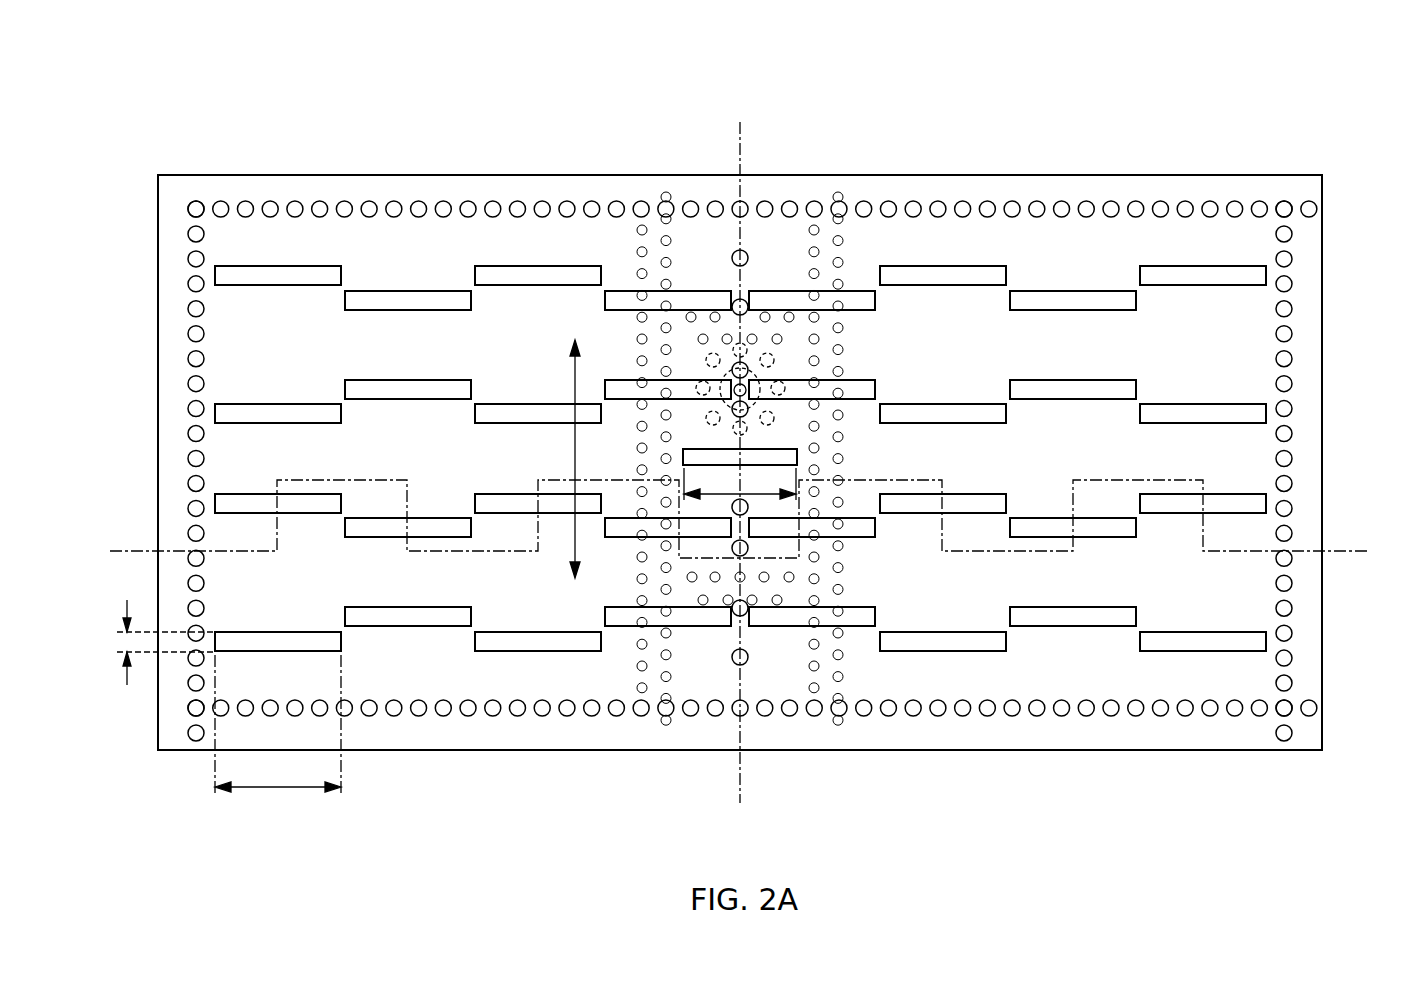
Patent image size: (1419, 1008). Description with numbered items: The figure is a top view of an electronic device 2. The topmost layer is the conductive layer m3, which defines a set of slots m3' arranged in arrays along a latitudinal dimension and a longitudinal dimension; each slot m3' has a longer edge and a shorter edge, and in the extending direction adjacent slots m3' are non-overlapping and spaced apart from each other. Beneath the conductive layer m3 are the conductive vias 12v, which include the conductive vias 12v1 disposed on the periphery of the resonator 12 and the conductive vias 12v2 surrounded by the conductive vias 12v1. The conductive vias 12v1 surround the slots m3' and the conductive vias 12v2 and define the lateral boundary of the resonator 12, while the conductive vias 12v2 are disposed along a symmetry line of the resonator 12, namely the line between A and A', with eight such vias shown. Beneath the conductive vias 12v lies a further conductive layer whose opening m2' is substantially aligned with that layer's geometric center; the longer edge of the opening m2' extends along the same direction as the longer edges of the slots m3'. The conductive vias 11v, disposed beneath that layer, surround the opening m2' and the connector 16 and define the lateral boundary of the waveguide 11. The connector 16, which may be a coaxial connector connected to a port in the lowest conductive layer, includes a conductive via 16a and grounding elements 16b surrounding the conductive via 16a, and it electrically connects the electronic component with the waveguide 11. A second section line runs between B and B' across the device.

The electronic device 2 is at (94, 47).
The waveguide 11 is at (868, 360).
The conductive vias 11v is at (663, 674).
The resonator 12 is at (1345, 263).
The conductive vias 12v is at (715, 107).
The conductive vias 12v1 is at (591, 203).
The conductive vias 12v2 is at (733, 255).
The connector 16 is at (988, 107).
The conductive via 16a is at (786, 386).
The grounding elements 16b is at (746, 364).
The conductive layer m3 is at (805, 211).
The slots m3' is at (278, 198).
The opening m2' is at (786, 633).
The symmetry line end point A is at (773, 457).
The symmetry line end point A' is at (775, 804).
The section line B is at (736, 519).
The section line B' is at (1370, 515).